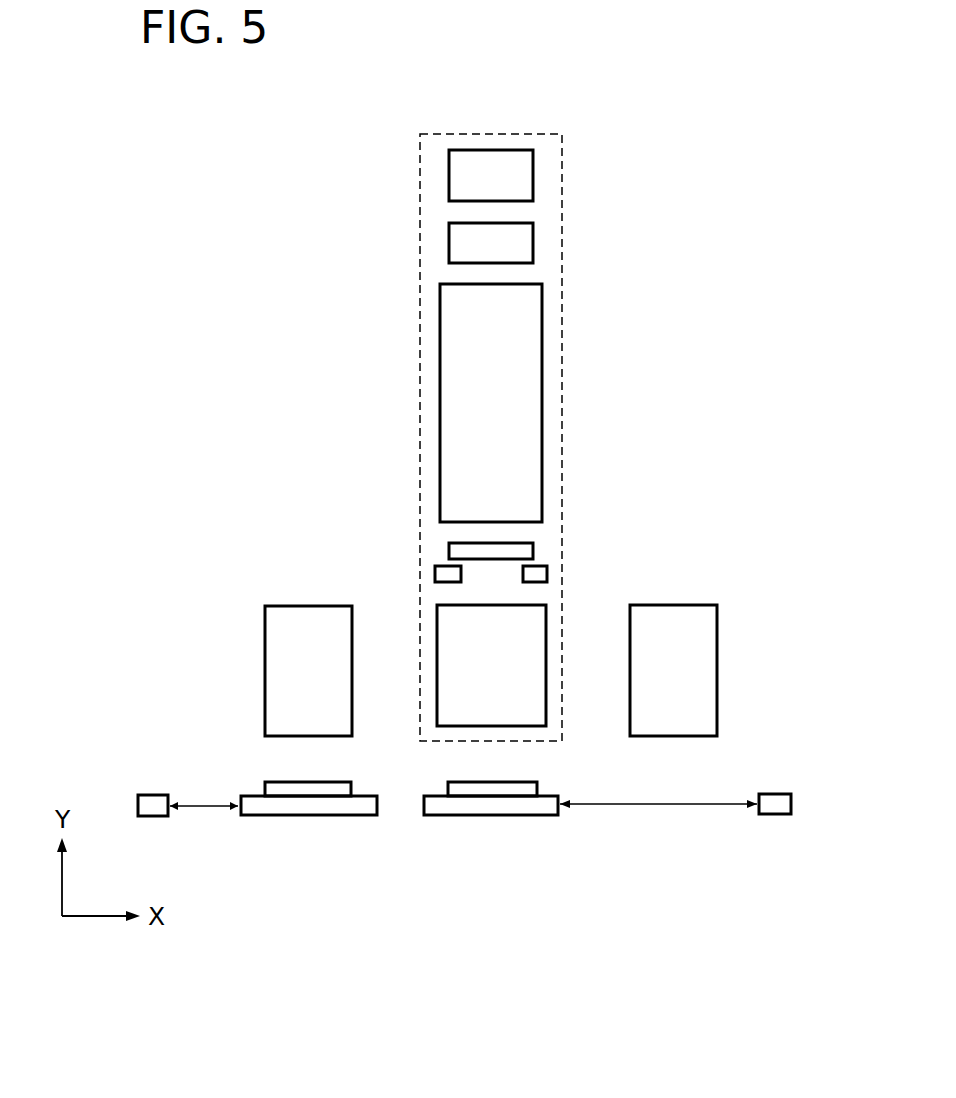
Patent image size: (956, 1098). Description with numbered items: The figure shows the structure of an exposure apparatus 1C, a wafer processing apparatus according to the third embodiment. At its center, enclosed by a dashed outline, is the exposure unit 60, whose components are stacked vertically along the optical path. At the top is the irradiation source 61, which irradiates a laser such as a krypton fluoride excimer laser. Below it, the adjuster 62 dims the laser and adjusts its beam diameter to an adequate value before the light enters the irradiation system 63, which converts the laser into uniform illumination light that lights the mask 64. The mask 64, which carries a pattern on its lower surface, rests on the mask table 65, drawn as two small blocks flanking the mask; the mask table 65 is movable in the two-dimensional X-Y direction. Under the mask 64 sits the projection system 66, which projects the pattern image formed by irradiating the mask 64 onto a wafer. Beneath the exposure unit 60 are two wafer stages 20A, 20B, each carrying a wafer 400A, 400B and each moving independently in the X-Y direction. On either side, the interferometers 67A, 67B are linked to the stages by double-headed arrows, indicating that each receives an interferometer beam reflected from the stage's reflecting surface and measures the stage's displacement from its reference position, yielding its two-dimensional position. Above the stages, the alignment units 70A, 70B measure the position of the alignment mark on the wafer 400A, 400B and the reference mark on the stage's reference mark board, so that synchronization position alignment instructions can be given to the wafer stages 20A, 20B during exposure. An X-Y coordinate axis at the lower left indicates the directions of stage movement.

The exposure apparatus 1C is at (745, 170).
The exposure unit 60 is at (562, 323).
The irradiation source 61 is at (533, 175).
The adjuster 62 is at (533, 242).
The irradiation system 63 is at (542, 432).
The mask 64 is at (533, 551).
The mask table 65 is at (547, 574).
The projection system 66 is at (546, 676).
The alignment unit 70A is at (296, 606).
The alignment unit 70B is at (677, 605).
The interferometer 67A is at (159, 795).
The interferometer 67B is at (779, 794).
The wafer stage 20A is at (322, 815).
The wafer stage 20B is at (507, 815).
The wafer 400A is at (322, 782).
The wafer 400B is at (502, 782).